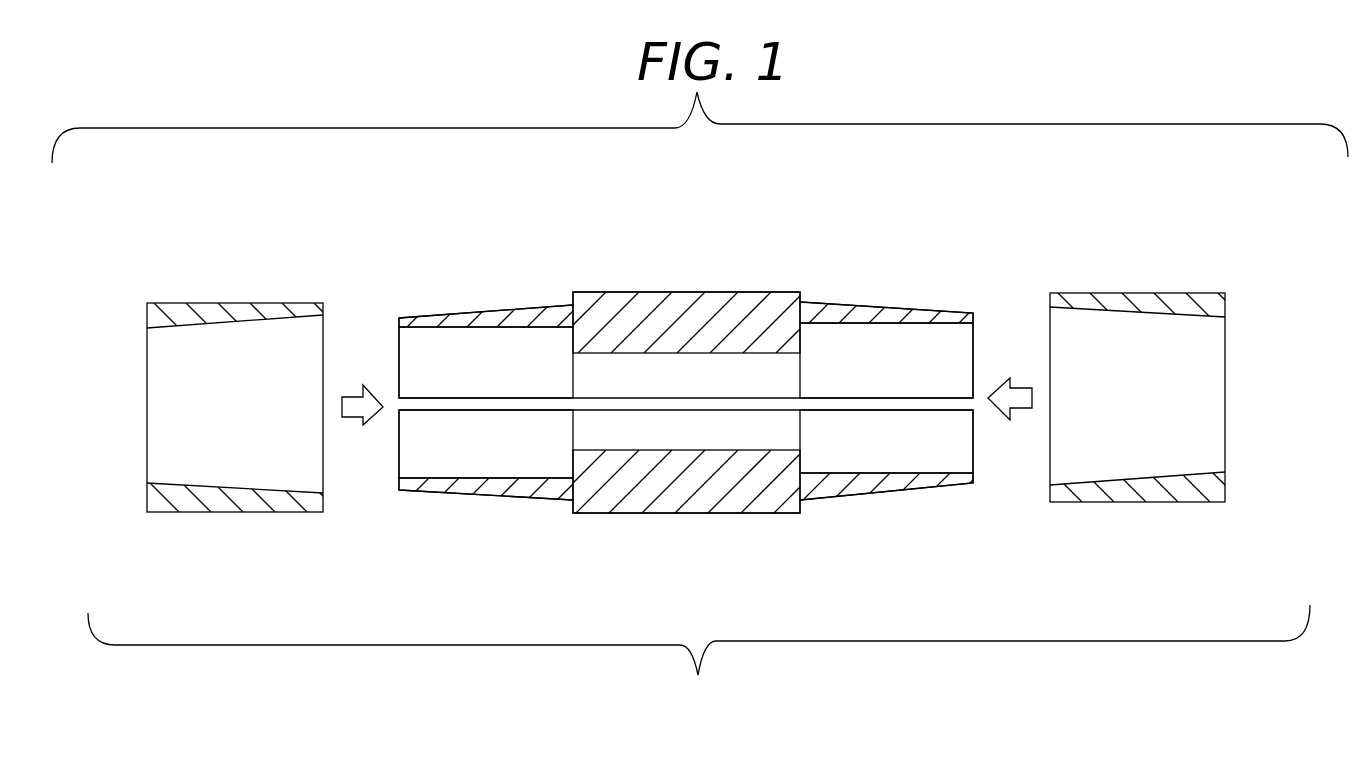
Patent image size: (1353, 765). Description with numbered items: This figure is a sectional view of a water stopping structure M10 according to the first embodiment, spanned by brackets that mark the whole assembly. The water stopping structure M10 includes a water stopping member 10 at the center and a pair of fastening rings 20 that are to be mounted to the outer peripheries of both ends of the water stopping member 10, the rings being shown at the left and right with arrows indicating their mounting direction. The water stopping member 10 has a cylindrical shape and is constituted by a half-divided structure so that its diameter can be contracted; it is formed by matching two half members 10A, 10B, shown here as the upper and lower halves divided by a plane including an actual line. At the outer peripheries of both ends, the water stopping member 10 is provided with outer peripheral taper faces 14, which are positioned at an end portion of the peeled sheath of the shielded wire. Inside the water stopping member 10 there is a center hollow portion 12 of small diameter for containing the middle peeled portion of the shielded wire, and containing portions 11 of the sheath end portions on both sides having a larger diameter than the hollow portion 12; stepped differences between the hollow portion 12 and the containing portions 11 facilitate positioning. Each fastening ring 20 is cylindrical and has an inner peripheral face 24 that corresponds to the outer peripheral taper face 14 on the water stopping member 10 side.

The water stopping member 10 is at (678, 394).
The half member 10A is at (812, 291).
The half member 10B is at (803, 526).
The containing portion of sheath end portion 11 is at (520, 327).
The hollow portion 12 is at (665, 353).
The outer peripheral taper face 14 is at (470, 305).
The fastening ring 20 is at (235, 296).
The inner peripheral face 24 is at (210, 327).
The water stopping structure M10 is at (700, 402).